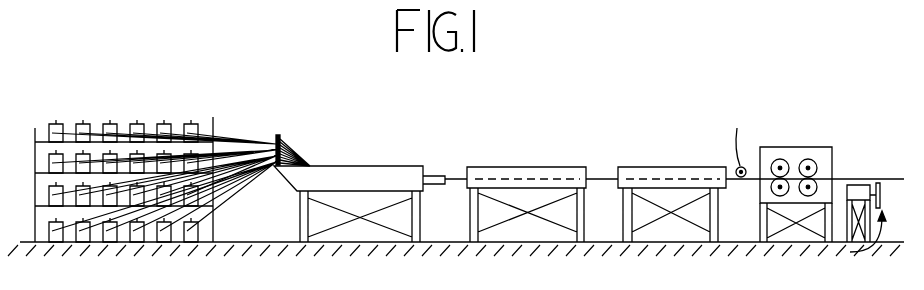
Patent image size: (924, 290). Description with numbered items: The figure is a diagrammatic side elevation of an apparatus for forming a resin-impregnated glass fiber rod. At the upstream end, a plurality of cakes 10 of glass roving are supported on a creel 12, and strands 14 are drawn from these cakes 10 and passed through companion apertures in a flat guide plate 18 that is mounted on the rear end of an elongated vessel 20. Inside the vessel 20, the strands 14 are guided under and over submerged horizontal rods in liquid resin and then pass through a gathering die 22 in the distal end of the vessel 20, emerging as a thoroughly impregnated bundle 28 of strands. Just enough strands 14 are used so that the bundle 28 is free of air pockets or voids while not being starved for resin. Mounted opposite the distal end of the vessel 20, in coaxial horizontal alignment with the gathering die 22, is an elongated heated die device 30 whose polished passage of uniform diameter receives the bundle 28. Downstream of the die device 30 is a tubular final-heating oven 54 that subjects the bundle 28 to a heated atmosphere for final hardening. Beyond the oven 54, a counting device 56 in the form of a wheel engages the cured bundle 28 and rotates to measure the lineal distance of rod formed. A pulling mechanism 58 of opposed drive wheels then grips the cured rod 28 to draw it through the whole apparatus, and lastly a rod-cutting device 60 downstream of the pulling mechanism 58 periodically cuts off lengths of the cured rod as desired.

The cakes of glass roving 10 is at (137, 122).
The creel 12 is at (213, 124).
The strands 14 is at (269, 138).
The guide plate 18 is at (284, 141).
The vessel 20 is at (372, 165).
The gathering die 22 is at (436, 175).
The bundle of strands 28 is at (460, 178).
The die device 30 is at (542, 129).
The final-heating oven 54 is at (636, 167).
The counting device 56 is at (741, 178).
The pulling mechanism 58 is at (832, 152).
The rod-cutting device 60 is at (862, 186).